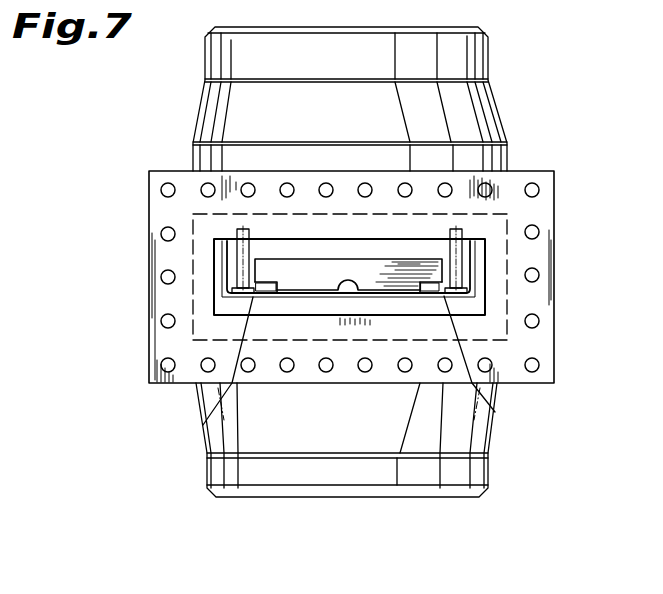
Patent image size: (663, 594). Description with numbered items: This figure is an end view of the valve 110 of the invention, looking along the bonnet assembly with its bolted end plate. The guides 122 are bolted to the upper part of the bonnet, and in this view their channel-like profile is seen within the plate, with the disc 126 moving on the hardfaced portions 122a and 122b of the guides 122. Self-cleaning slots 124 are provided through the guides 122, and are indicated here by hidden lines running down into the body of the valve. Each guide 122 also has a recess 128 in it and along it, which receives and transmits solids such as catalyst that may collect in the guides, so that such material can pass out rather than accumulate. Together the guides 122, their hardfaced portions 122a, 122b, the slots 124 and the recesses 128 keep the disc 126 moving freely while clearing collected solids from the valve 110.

The valve 110 is at (130, 169).
The guides 122 is at (232, 273).
The hardfaced portion 122a is at (248, 267).
The hardfaced portion 122b is at (265, 296).
The self-cleaning slots 124 is at (203, 425).
The disc 126 is at (388, 273).
The recess 128 is at (252, 290).